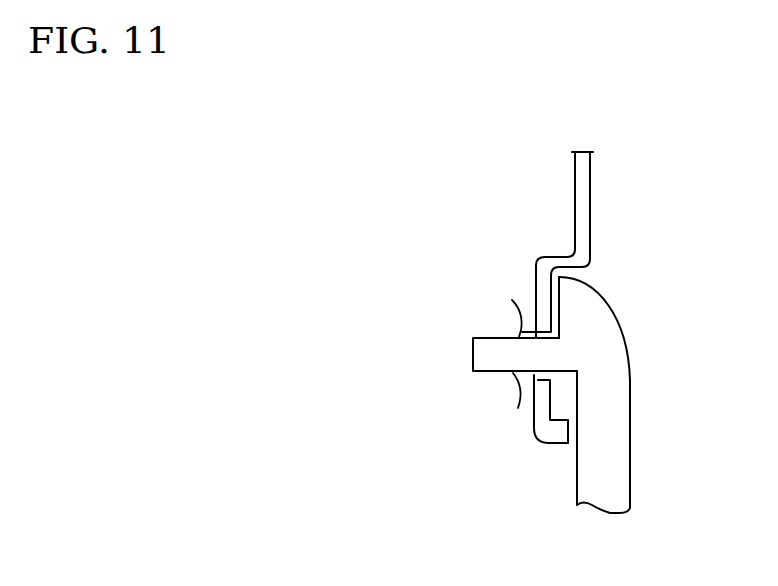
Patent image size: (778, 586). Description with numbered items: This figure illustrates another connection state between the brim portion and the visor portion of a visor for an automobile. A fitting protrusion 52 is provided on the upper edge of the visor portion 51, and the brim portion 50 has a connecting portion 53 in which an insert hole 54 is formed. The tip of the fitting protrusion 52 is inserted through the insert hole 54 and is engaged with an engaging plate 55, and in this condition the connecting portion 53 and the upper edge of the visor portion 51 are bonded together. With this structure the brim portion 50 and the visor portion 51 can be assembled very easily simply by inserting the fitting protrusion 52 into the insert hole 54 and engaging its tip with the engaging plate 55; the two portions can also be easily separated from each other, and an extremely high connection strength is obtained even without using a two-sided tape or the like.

The brim portion 50 is at (585, 190).
The visor portion 51 is at (623, 472).
The fitting protrusion 52 is at (478, 356).
The connecting portion 53 is at (548, 437).
The insert hole 54 is at (519, 332).
The engaging plate 55 is at (512, 400).